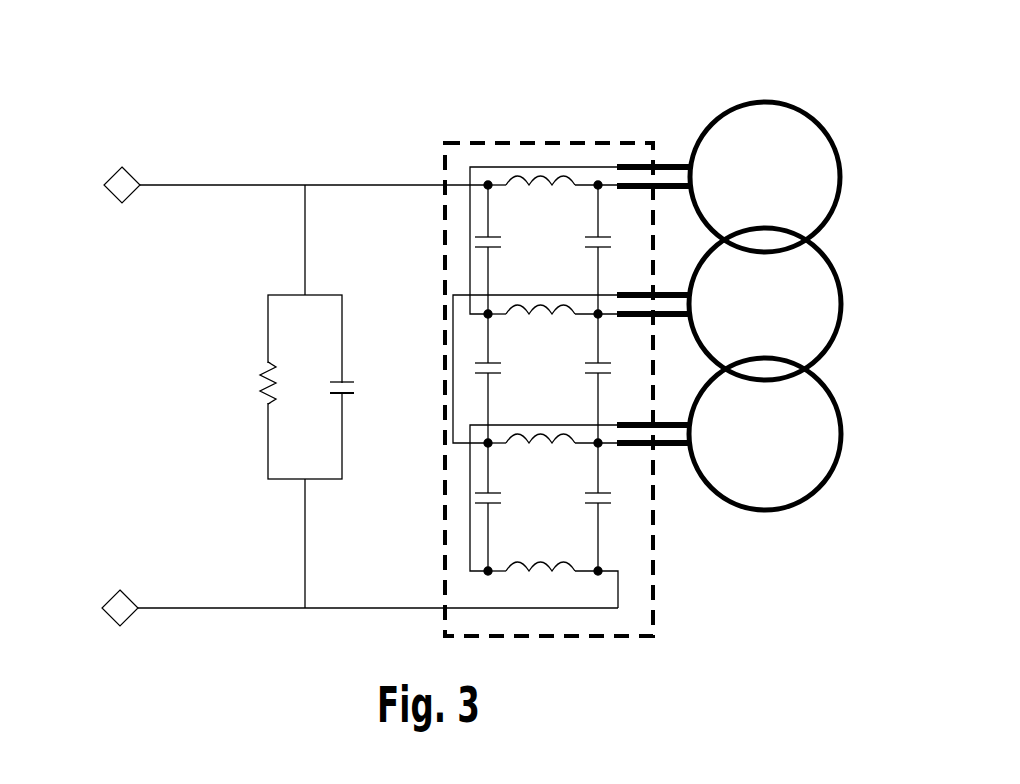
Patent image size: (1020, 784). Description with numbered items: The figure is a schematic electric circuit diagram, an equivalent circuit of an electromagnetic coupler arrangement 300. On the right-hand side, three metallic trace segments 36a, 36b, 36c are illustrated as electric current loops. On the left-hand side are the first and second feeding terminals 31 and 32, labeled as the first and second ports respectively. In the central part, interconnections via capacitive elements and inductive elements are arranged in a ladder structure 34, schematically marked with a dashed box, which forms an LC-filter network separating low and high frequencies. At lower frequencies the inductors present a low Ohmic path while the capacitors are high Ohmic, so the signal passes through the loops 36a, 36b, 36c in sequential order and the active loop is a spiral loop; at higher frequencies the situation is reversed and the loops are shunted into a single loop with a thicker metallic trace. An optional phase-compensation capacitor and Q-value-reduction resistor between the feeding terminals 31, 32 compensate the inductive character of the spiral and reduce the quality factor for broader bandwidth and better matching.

The wireless power transfer circuit arrangement 300 is at (866, 41).
The feeding terminal 31 is at (116, 185).
The feeding terminal 32 is at (120, 618).
The ladder structure 34 is at (501, 144).
The metallic trace segment 36a is at (822, 203).
The metallic trace segment 36b is at (820, 337).
The metallic trace segment 36c is at (810, 467).